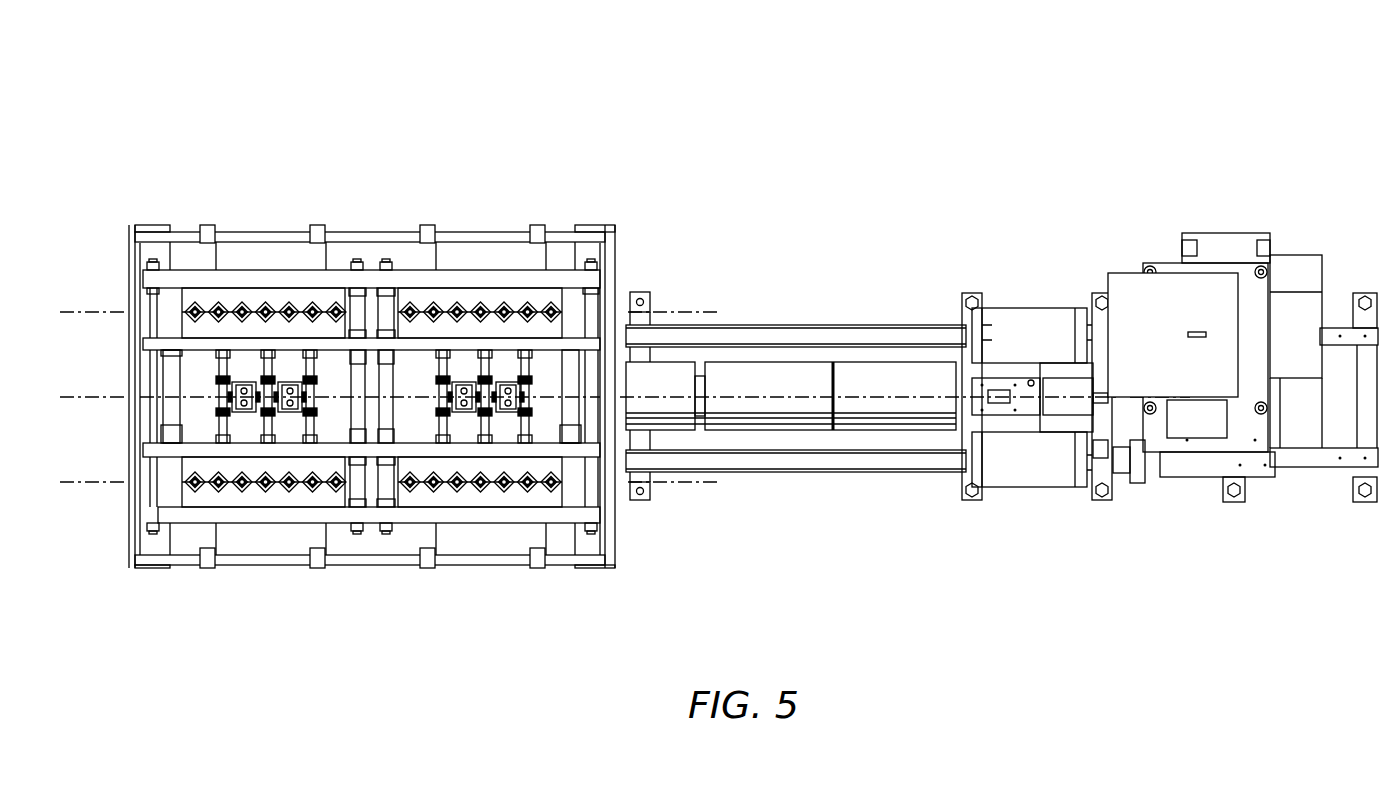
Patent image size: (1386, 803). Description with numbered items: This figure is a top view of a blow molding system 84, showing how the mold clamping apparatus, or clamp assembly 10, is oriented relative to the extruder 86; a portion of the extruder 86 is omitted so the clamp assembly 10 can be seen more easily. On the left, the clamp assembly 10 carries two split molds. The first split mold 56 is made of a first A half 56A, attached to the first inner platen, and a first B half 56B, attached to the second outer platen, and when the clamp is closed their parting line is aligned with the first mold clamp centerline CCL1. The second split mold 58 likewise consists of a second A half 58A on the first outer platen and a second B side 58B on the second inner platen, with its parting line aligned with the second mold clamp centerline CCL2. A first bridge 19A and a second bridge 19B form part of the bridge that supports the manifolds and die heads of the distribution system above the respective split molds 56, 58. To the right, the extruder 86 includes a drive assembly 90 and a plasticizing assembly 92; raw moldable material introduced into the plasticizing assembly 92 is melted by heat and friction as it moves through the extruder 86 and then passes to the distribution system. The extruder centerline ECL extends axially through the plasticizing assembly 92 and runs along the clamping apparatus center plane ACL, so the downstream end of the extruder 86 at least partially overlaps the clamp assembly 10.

The blow molding system 84 is at (118, 95).
The clamp assembly 10 is at (390, 186).
The first bridge 19A is at (615, 272).
The second bridge 19B is at (133, 516).
The first split mold 56 is at (258, 508).
The first A half 56A is at (446, 466).
The first B half 56B is at (500, 490).
The second split mold 58 is at (284, 281).
The second A half 58A is at (481, 308).
The second B side 58B is at (535, 330).
The extruder 86 is at (1036, 262).
The drive assembly 90 is at (1178, 494).
The plasticizing assembly 92 is at (852, 436).
The clamping apparatus center plane ACL is at (70, 390).
The first mold clamp centerline CCL1 is at (90, 474).
The second mold clamp centerline CCL2 is at (90, 304).
The extruder centerline ECL is at (928, 386).